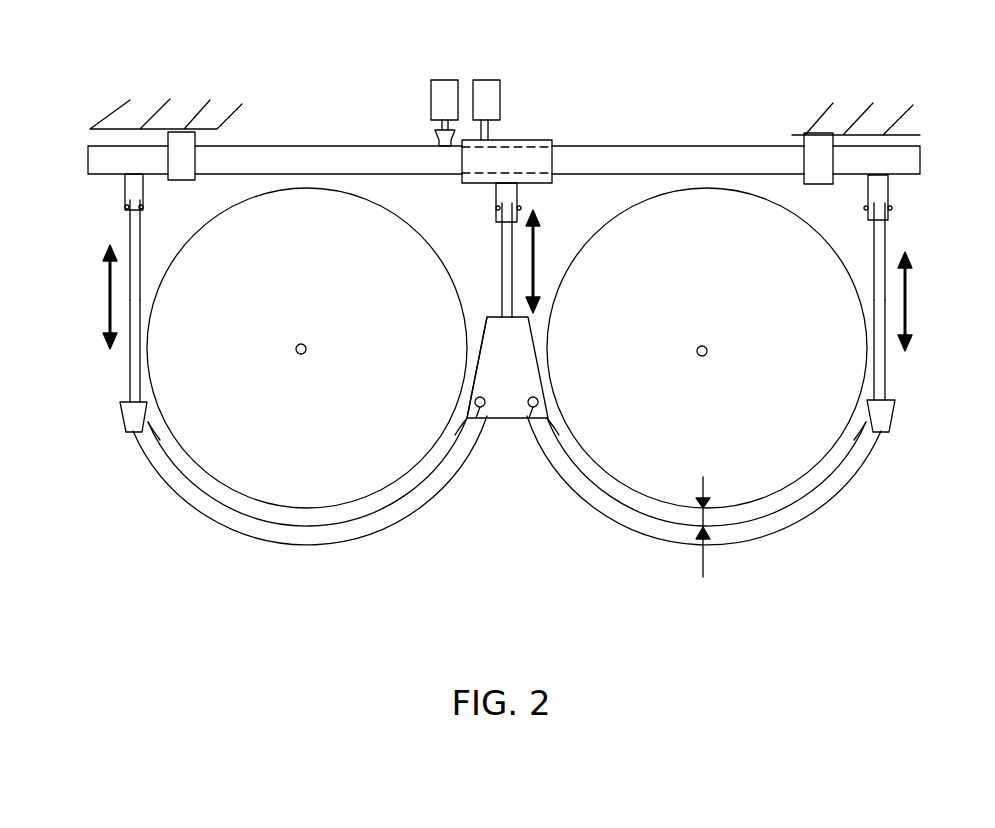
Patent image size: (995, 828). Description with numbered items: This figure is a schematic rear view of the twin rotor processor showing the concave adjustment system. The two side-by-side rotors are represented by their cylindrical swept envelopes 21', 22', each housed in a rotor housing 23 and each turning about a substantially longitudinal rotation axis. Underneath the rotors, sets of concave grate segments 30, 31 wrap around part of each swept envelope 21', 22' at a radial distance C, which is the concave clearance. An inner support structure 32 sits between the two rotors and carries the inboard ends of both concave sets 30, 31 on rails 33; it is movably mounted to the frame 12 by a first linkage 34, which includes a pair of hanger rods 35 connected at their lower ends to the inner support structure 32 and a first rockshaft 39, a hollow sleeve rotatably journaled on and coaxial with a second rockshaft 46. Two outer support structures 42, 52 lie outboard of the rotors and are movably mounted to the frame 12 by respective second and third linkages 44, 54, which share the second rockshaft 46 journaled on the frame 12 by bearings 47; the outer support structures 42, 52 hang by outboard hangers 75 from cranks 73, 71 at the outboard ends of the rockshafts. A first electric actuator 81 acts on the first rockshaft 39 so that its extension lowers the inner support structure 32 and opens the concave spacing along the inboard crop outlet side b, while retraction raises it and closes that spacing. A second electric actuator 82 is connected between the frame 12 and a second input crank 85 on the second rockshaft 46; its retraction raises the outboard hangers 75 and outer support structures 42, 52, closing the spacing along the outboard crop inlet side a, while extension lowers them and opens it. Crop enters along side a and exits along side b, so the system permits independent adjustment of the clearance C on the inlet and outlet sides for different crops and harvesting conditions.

The frame 12 is at (182, 108).
The second rockshaft 46 is at (690, 146).
The bearings 47 is at (197, 135).
The first rockshaft 39 is at (542, 140).
The first electric actuator 81 is at (500, 98).
The second electric actuator 82 is at (428, 99).
The second input crank 85 is at (437, 141).
The swept envelope 21' is at (307, 501).
The swept envelope 22' is at (706, 496).
The crank 73 is at (125, 186).
The crank 71 is at (888, 196).
The outboard hangers 75 is at (130, 234).
The second linkage 44 is at (131, 357).
The third linkage 54 is at (887, 368).
The outer support structure 42 is at (128, 418).
The outer support structure 52 is at (894, 418).
The set of concave grate segments 30 is at (306, 500).
The set of concave grate segments 31 is at (709, 495).
The inner support structure 32 is at (500, 419).
The rails 33 is at (467, 420).
The rotor housing 23 is at (526, 418).
The first linkage 34 is at (502, 252).
The hanger rods 35 is at (502, 278).
The outboard side a is at (157, 428).
The inboard side b is at (445, 445).
The radial distance C is at (703, 492).